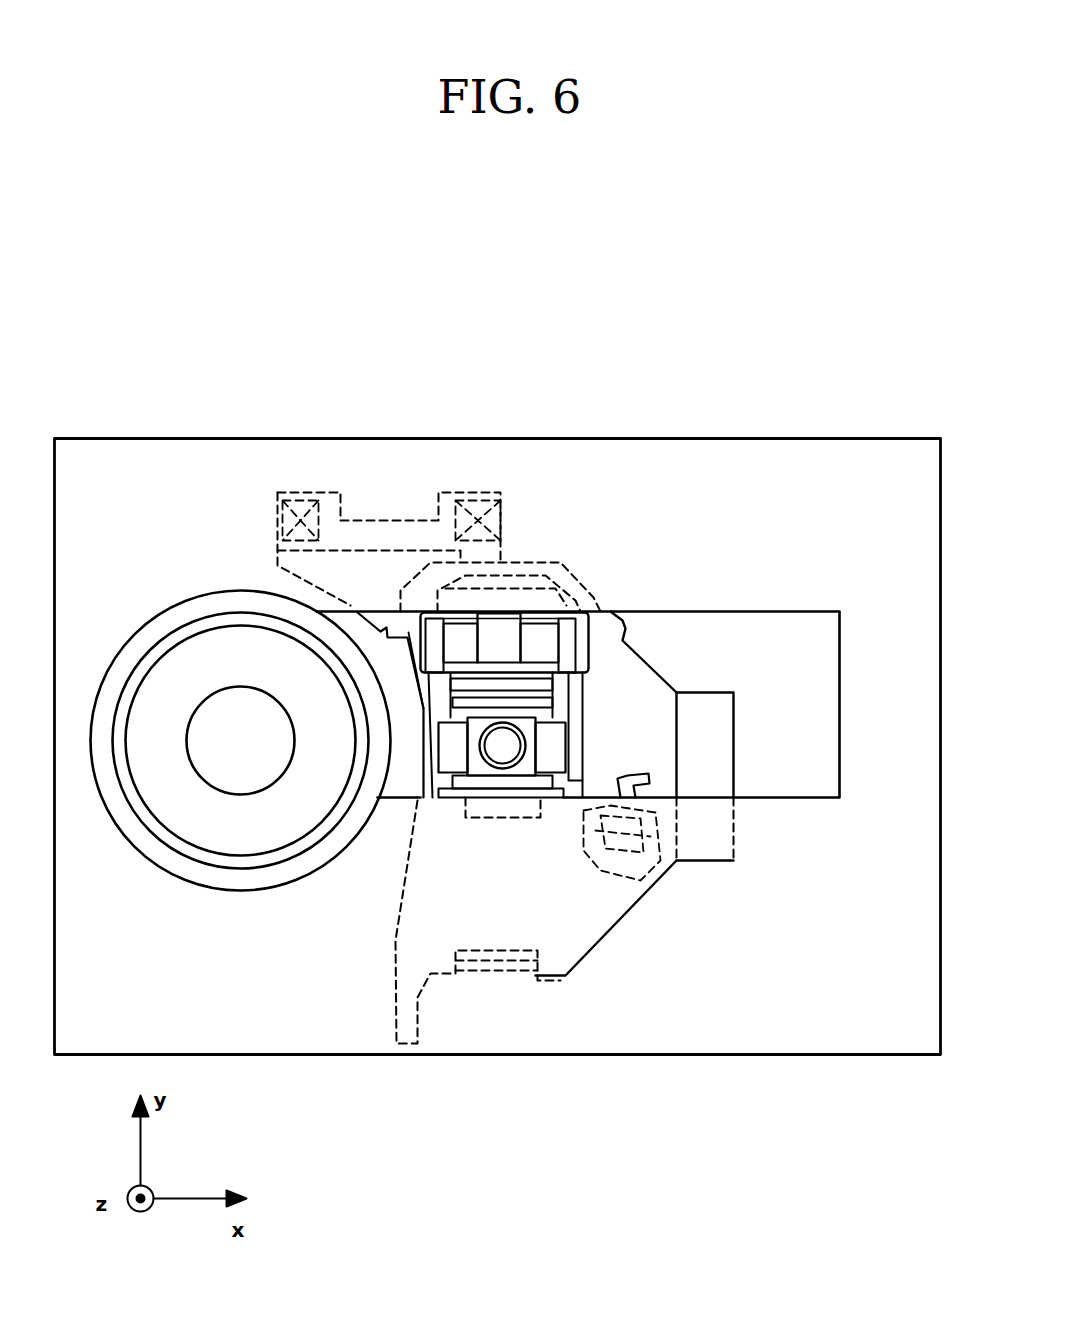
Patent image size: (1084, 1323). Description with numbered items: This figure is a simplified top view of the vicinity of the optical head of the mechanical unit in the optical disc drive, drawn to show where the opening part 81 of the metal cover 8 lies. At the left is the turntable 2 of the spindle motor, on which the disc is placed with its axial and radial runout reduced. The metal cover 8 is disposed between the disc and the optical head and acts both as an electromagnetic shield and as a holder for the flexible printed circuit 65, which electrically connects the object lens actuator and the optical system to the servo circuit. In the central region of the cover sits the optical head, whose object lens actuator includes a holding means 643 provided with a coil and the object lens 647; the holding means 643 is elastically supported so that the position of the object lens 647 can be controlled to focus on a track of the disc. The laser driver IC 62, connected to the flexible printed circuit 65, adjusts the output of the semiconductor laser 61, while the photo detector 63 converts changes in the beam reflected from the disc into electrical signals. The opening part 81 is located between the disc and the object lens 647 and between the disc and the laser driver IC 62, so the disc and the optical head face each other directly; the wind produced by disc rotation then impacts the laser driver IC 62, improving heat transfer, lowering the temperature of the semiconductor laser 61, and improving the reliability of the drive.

The turntable 2 is at (238, 717).
The metal cover 8 is at (795, 1027).
The opening part 81 is at (811, 652).
The laser driver IC 62 is at (510, 637).
The object lens 647 is at (506, 742).
The flexible printed circuit 65 is at (700, 717).
The holding means 643 is at (453, 753).
The semiconductor laser 61 is at (603, 847).
The photo detector 63 is at (502, 977).